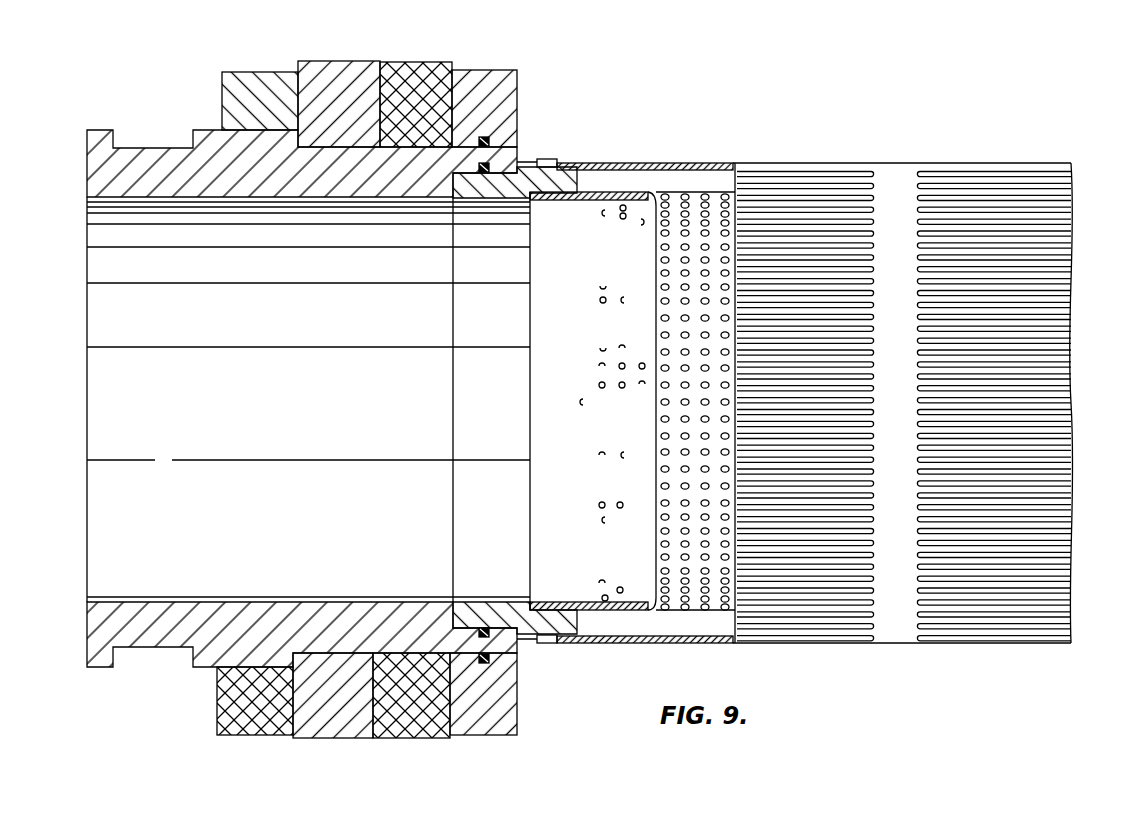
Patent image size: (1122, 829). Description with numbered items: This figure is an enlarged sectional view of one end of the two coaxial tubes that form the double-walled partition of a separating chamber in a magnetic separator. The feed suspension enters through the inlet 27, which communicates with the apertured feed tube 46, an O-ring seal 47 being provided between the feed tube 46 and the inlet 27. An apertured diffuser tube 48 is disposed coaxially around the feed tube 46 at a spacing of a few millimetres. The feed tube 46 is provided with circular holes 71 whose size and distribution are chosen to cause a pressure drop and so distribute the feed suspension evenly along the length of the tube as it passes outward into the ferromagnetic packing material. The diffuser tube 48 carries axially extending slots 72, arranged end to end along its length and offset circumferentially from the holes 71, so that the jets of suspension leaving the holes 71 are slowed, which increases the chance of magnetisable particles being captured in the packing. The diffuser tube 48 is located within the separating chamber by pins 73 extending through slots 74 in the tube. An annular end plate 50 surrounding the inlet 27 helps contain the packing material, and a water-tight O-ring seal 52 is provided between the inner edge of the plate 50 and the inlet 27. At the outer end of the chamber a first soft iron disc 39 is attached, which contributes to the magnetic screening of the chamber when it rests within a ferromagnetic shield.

The inlet 27 is at (142, 163).
The first soft iron disc 39 is at (243, 88).
The feed tube 46 is at (677, 190).
The O-ring seal 47 is at (489, 634).
The diffuser tube 48 is at (896, 168).
The annular end plate 50 is at (497, 93).
The O-ring seal 52 is at (488, 660).
The holes 71 is at (703, 440).
The slots 72 is at (1062, 397).
The pins 73 is at (550, 160).
The slots 74 is at (527, 162).